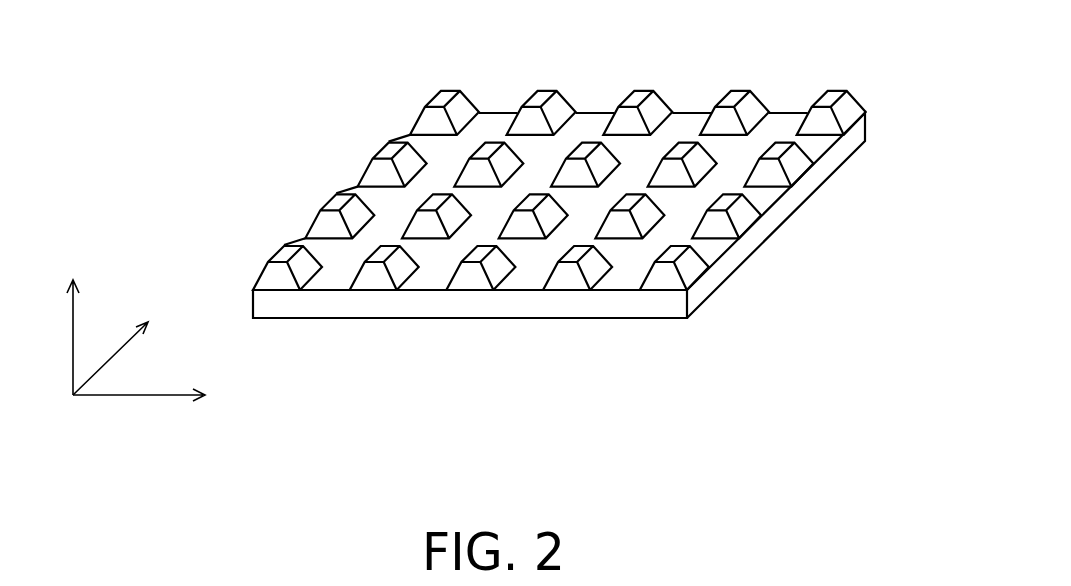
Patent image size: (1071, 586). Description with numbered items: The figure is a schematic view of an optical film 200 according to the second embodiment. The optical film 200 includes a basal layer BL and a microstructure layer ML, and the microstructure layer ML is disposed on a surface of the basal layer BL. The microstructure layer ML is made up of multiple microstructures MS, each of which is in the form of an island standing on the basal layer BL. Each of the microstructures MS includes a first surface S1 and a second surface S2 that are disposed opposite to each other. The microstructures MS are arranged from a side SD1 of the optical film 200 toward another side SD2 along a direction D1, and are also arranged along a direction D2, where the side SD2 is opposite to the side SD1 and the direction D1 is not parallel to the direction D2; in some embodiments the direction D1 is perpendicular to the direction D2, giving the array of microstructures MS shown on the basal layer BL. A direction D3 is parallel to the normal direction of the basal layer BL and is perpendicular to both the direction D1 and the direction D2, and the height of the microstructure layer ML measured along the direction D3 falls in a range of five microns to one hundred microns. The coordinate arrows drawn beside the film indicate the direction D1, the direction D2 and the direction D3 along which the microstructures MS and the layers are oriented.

The optical film 200 is at (601, 231).
The basal layer BL is at (667, 310).
The microstructures MS is at (575, 163).
The microstructure layer ML is at (575, 163).
The first surface S1 is at (606, 99).
The second surface S2 is at (462, 160).
The side SD1 is at (300, 165).
The side SD2 is at (847, 209).
The direction D1 is at (159, 395).
The direction D2 is at (130, 344).
The direction D3 is at (70, 318).